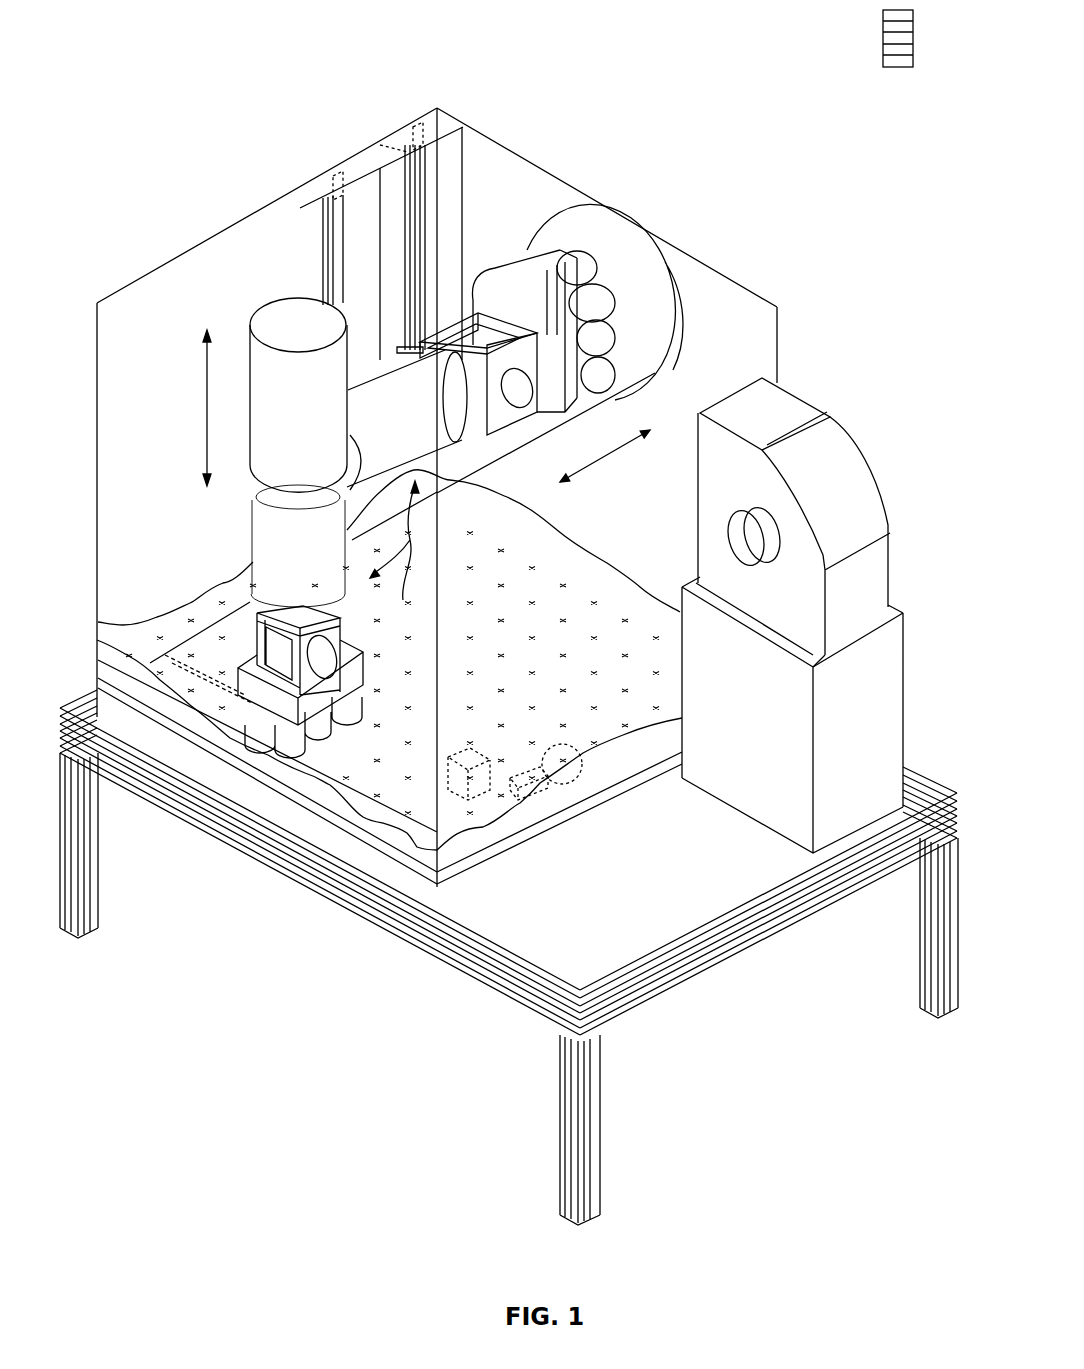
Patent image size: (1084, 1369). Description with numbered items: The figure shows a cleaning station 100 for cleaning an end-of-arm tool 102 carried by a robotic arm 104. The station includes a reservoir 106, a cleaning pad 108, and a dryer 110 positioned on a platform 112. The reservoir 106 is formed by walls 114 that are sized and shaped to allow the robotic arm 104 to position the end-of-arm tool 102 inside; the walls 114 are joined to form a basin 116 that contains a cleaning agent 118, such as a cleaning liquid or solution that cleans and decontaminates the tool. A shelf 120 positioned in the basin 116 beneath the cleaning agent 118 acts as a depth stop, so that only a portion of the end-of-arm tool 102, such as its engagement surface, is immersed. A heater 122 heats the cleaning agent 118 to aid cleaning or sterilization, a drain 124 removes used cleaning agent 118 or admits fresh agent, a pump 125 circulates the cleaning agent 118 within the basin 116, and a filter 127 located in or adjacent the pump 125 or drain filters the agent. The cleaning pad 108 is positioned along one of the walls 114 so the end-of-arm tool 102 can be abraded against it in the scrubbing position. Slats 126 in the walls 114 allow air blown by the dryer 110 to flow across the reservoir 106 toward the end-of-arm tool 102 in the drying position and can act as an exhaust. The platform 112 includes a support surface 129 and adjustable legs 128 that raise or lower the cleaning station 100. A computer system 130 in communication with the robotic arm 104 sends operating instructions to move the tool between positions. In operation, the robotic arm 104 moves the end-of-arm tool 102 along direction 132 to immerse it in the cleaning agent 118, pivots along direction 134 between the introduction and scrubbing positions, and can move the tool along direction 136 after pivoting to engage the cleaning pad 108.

The cleaning station 100 is at (140, 96).
The end-of-arm tool 102 is at (592, 285).
The robotic arm 104 is at (260, 310).
The reservoir 106 is at (778, 308).
The cleaning pad 108 is at (548, 224).
The dryer 110 is at (850, 475).
The platform 112 is at (538, 1013).
The walls 114 is at (155, 343).
The basin 116 is at (398, 786).
The cleaning agent 118 is at (187, 707).
The shelf 120 is at (217, 763).
The heater 122 is at (165, 705).
The drain 124 is at (567, 787).
The pump 125 is at (478, 800).
The slats 126 is at (333, 193).
The filter 127 is at (530, 807).
The legs 128 is at (600, 1163).
The support surface 129 is at (722, 898).
The computer system 130 is at (913, 67).
The direction 132 is at (200, 410).
The direction 134 is at (396, 553).
The direction 136 is at (618, 452).